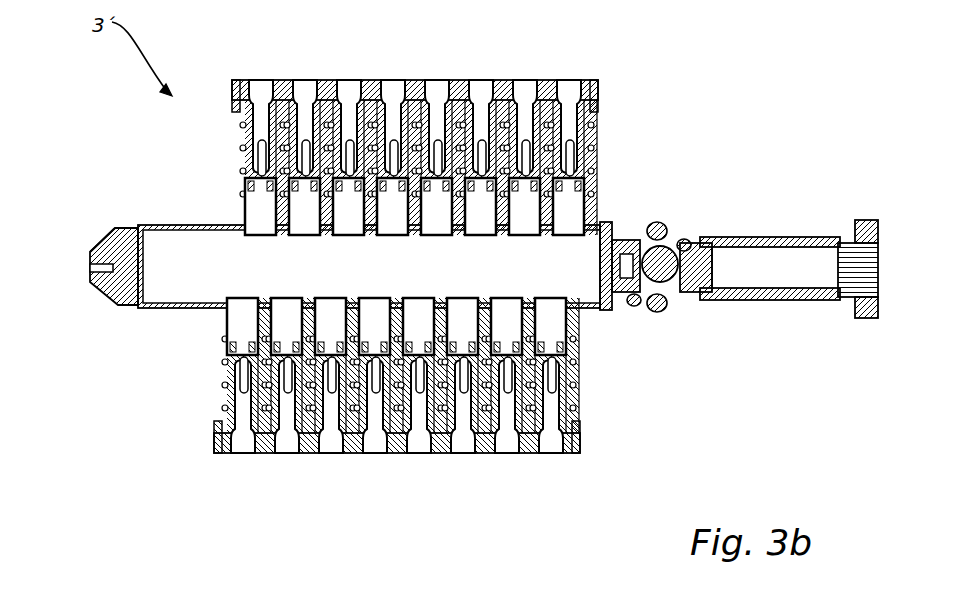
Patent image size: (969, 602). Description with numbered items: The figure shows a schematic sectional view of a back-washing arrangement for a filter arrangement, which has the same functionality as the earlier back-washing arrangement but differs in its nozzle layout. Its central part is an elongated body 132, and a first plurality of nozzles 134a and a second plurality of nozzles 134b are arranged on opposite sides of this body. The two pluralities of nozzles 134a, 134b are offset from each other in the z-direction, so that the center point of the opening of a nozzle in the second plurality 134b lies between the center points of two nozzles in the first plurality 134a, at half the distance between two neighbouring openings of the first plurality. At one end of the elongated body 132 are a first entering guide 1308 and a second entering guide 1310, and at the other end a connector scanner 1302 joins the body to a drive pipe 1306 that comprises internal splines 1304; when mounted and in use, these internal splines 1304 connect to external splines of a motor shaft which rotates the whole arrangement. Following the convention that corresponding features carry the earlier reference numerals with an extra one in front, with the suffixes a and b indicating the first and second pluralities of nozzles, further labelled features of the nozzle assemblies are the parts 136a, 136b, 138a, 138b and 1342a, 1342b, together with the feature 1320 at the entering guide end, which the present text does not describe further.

The elongated body 132 is at (185, 285).
The first entering guide 1308 is at (112, 298).
The second entering guide 1310 is at (110, 255).
The groove in head 1320 is at (92, 266).
The first plurality of nozzles 134a is at (477, 208).
The second plurality of nozzles 134b is at (563, 358).
The first end plate 136a is at (300, 80).
The second end plate 136b is at (292, 452).
The first tube 138a is at (412, 82).
The second tube 138b is at (392, 462).
The first plunger 1342a is at (442, 128).
The second plunger 1342b is at (458, 455).
The connector scanner 1302 is at (613, 318).
The internal splines 1304 is at (848, 265).
The drive pipe 1306 is at (733, 275).